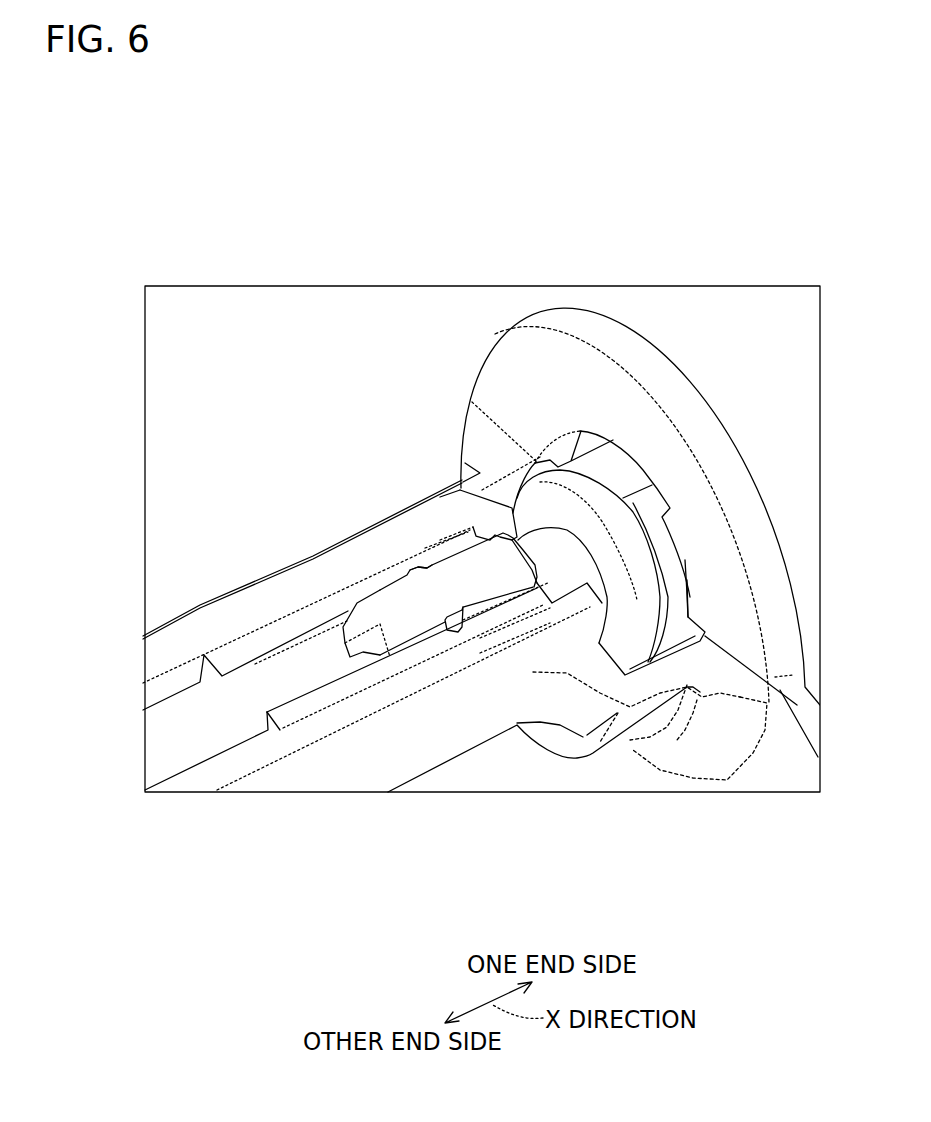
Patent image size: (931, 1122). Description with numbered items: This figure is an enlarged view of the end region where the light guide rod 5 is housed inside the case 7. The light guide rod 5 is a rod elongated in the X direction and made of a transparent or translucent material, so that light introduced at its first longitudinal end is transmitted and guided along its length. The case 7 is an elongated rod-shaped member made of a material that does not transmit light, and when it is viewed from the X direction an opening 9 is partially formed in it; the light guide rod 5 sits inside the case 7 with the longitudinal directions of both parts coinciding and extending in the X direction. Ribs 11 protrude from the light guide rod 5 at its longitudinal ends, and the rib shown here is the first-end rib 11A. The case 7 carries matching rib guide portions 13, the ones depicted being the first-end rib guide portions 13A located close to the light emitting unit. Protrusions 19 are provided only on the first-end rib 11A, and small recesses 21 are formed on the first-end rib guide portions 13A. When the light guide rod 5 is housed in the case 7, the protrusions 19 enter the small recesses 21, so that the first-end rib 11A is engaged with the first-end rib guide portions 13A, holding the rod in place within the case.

The light guide rod 5 is at (170, 717).
The case 7 is at (438, 763).
The opening 9 is at (195, 700).
The rib 11 is at (419, 558).
The first-end rib 11A is at (387, 585).
The rib guide portion 13 is at (340, 688).
The first-end rib guide portion 13A is at (253, 640).
The protrusion 19 is at (489, 634).
The small recess 21 is at (416, 566).